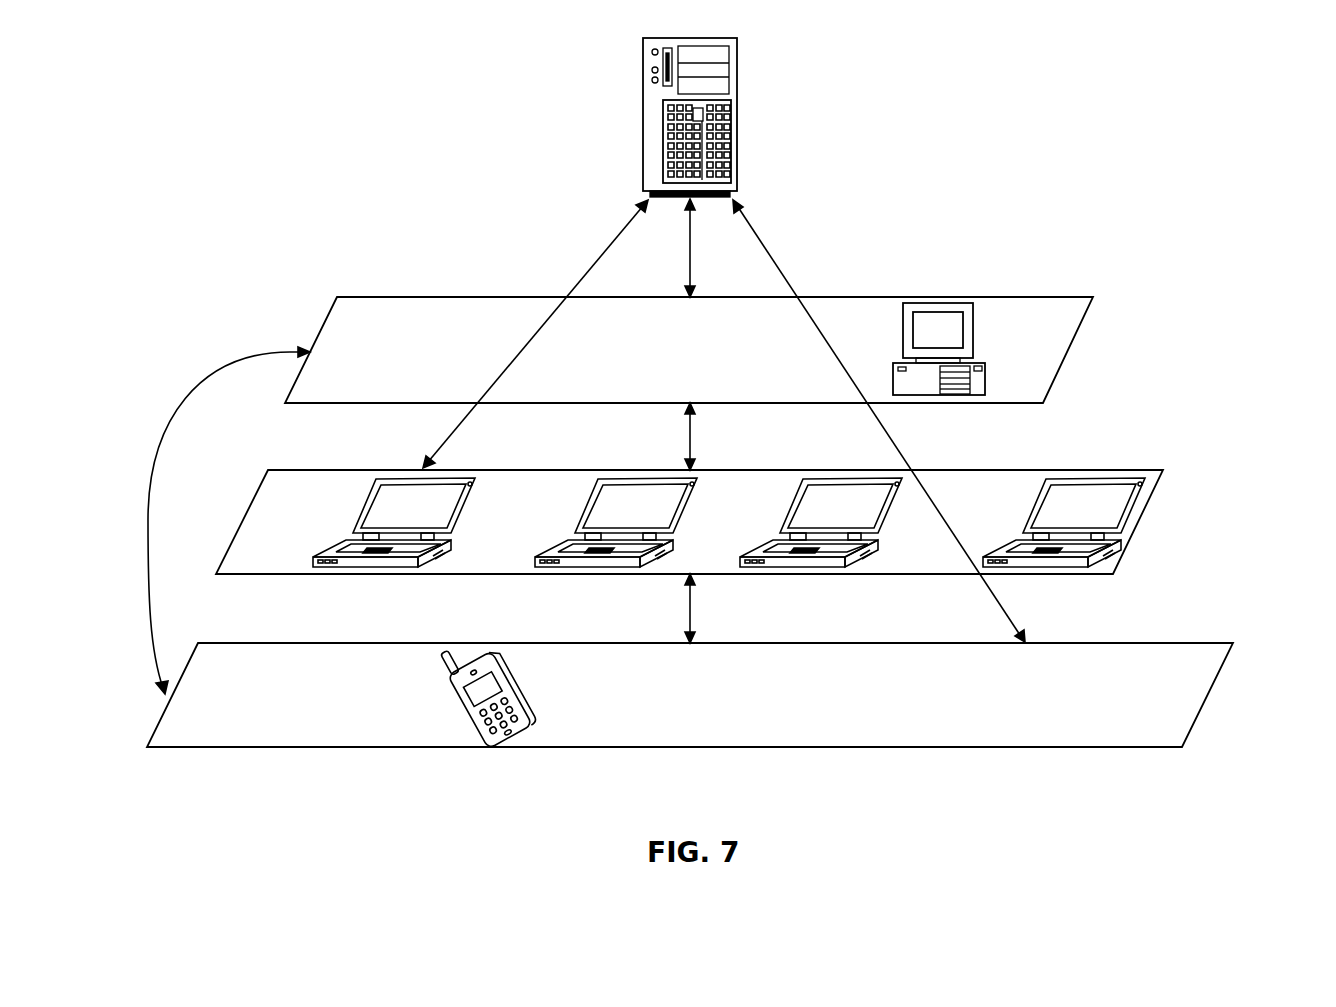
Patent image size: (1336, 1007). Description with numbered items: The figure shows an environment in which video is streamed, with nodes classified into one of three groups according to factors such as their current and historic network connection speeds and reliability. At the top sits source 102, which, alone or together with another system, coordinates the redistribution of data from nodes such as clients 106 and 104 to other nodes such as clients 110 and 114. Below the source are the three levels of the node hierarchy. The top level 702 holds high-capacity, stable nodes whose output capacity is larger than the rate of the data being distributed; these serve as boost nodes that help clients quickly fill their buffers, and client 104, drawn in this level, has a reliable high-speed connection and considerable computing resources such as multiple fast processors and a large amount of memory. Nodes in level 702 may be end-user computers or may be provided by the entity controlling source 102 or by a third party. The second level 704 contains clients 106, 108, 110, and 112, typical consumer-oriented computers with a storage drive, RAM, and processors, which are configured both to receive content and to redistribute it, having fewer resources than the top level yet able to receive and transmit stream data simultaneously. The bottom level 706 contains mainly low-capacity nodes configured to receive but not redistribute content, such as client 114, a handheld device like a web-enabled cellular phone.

The source 102 is at (738, 118).
The client 104 is at (985, 370).
The client 106 is at (355, 522).
The client 108 is at (575, 520).
The client 110 is at (790, 505).
The client 112 is at (1040, 495).
The client 114 is at (530, 713).
The top level 702 is at (1072, 352).
The second level 704 is at (1140, 522).
The bottom level 706 is at (1208, 695).